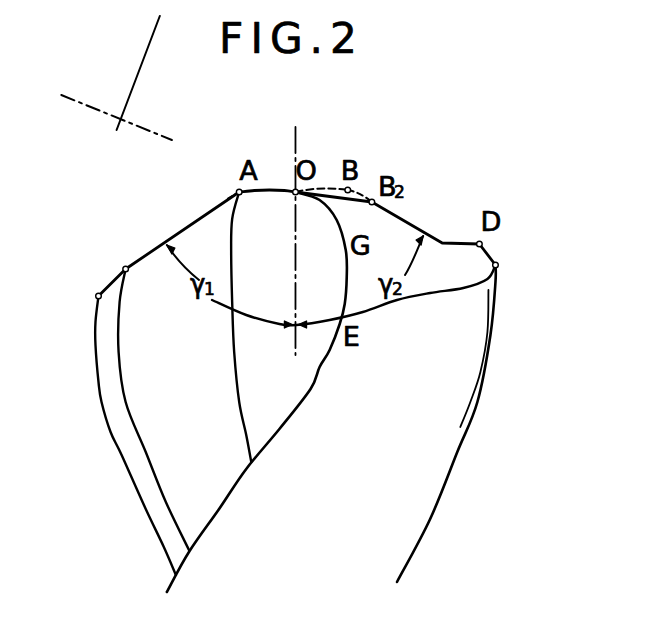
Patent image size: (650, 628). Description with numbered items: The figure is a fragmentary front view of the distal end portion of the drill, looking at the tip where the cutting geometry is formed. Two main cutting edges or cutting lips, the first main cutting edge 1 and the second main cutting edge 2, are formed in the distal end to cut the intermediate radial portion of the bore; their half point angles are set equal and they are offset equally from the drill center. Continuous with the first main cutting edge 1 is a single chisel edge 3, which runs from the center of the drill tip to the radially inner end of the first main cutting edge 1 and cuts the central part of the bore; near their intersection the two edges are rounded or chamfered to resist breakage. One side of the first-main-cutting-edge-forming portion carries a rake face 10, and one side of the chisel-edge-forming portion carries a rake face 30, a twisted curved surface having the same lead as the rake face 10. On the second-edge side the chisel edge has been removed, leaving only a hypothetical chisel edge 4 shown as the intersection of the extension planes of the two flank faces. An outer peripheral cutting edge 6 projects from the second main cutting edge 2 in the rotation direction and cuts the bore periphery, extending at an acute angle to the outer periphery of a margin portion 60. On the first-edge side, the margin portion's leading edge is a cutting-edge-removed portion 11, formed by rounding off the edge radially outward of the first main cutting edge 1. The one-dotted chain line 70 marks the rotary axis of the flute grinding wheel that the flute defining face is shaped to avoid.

The first main cutting edge 1 is at (180, 229).
The second main cutting edge 2 is at (415, 220).
The chisel edge 3 is at (277, 186).
The hypothetical chisel edge 4 is at (330, 186).
The outer peripheral cutting edge 6 is at (460, 240).
The rake face 10 is at (158, 250).
The cutting-edge-removed portion 11 is at (112, 282).
The rake face 30 is at (255, 225).
The margin portion 60 is at (490, 247).
The rotary axis 70 is at (107, 104).